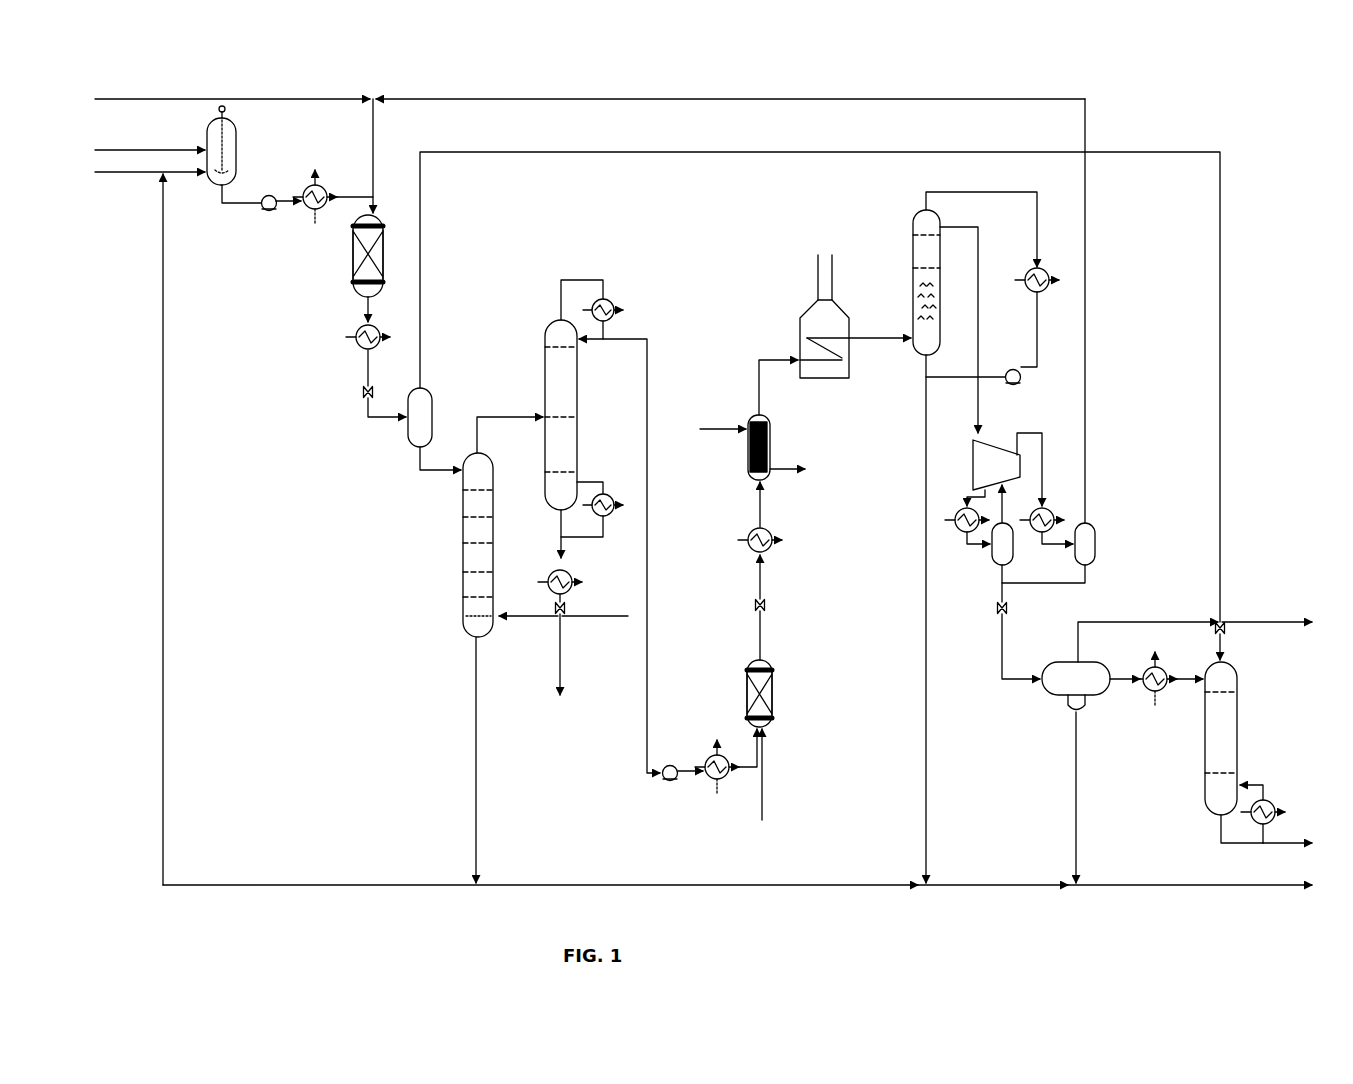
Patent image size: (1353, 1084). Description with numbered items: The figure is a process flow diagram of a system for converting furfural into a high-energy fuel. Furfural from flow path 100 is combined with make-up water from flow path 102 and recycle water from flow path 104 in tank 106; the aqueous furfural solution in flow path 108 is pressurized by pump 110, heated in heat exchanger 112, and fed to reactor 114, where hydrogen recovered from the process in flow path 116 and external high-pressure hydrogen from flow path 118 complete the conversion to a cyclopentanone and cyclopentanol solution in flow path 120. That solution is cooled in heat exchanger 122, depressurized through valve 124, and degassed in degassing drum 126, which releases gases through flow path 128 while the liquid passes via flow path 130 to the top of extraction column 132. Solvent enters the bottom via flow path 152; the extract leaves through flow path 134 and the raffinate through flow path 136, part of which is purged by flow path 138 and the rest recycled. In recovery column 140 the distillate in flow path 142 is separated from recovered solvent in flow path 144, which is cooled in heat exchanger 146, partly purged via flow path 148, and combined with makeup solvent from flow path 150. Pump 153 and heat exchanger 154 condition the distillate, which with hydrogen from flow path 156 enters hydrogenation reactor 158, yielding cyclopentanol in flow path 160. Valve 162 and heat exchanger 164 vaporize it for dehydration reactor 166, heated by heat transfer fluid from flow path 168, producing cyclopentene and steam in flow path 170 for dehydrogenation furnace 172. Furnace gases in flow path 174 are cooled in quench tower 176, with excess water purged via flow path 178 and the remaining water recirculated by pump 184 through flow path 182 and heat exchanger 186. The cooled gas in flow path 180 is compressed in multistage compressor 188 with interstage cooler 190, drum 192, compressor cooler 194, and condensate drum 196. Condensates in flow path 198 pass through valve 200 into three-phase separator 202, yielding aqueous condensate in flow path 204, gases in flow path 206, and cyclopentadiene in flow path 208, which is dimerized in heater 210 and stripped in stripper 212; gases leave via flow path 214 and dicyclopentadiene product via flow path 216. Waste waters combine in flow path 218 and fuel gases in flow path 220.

The furfural feed 100 is at (130, 150).
The make-up water 102 is at (111, 176).
The recycle water 104 is at (162, 389).
The cyclopentanol reactor feed tank 106 is at (240, 150).
The aqueous furfural solution 108 is at (218, 212).
The cyclopentanol reactor feed pump 110 is at (270, 224).
The cyclopentanol reactor feed heater 112 is at (326, 186).
The cyclopentanol reactor 114 is at (352, 266).
The hydrogen recovered from process 116 is at (541, 98).
The high pressure hydrogen feed 118 is at (196, 97).
The cyclopentanone/cyclopentanol solution 120 is at (384, 420).
The cyclopentanol reactor product cooler 122 is at (359, 348).
The solution let-down valve 124 is at (363, 394).
The degasing drum 126 is at (432, 405).
The gases removed from solution 128 is at (505, 154).
The cyclopentanone/cyclopentanol solution 130 is at (426, 470).
The cyclopentanol extraction column 132 is at (456, 588).
The extract 134 is at (489, 416).
The raffinate 136 is at (470, 768).
The process water purge 138 is at (718, 888).
The cyclopentanol recovery column 140 is at (541, 358).
The cyclopentanone/cyclopentanol distillate 142 is at (647, 575).
The recovered solvent 144 is at (556, 530).
The recycle solvent cooler 146 is at (572, 574).
The solvent purge 148 is at (562, 676).
The makeup solvent 150 is at (602, 622).
The solvent 152 is at (517, 622).
The hydrogenation reactor feed pump 153 is at (668, 784).
The hydrogenation reactor feed heater 154 is at (706, 754).
The hydrogen feed 156 is at (764, 788).
The cyclopentanone hydrogenation reactor 158 is at (774, 690).
The cyclopentanol 160 is at (756, 641).
The cyclopentanol let-down valve 162 is at (766, 600).
The cyclopentanol vaporizer 164 is at (747, 552).
The cyclopentanol dehydration reactor 166 is at (772, 436).
The heat transfer fluid 168 is at (719, 432).
The cyclopentene/water vapor 170 is at (770, 356).
The cyclopentene dehydrogenation furnace 172 is at (820, 380).
The cyclopentadiene/hydrogen/water vapor 174 is at (872, 342).
The quench tower 176 is at (912, 248).
The cooled product gases 178 is at (928, 745).
The excess water from quench tower 180 is at (980, 310).
The recycled quench water 182 is at (1040, 345).
The quench water recycle pump 184 is at (1022, 380).
The quench water cooler 186 is at (1038, 294).
The multistage compressor 188 is at (986, 444).
The interstage cooler 190 is at (960, 516).
The condensate separation drum 192 is at (994, 556).
The compressor effluent cooler 194 is at (1046, 524).
The condensate separation drum 196 is at (1096, 548).
The cyclopentadiene/water condensates 198 is at (1004, 640).
The condensate let-down valve 200 is at (998, 616).
The three-phase separator 202 is at (1054, 702).
The aqueous phase condensate 204 is at (1078, 786).
The dissolved gases 206 is at (1148, 618).
The cyclopentadiene 208 is at (1124, 684).
The cyclopentadiene heater/dimerization 210 is at (1162, 670).
The cyclopentadiene stripper 212 is at (1204, 788).
The gases removed from product 214 is at (1236, 648).
The dicyclopentadiene product 216 is at (1280, 848).
The wastewater 218 is at (1160, 888).
The fuel byproduct 220 is at (1270, 618).